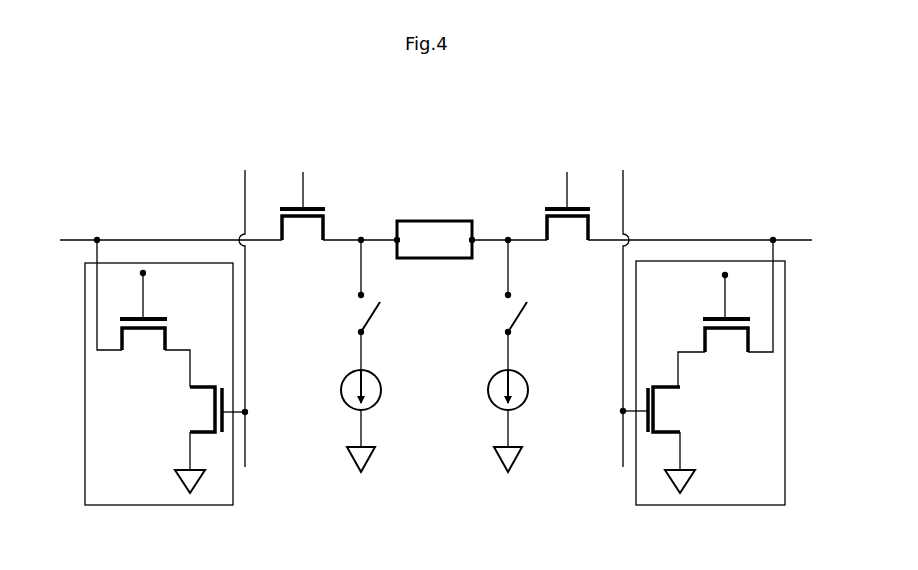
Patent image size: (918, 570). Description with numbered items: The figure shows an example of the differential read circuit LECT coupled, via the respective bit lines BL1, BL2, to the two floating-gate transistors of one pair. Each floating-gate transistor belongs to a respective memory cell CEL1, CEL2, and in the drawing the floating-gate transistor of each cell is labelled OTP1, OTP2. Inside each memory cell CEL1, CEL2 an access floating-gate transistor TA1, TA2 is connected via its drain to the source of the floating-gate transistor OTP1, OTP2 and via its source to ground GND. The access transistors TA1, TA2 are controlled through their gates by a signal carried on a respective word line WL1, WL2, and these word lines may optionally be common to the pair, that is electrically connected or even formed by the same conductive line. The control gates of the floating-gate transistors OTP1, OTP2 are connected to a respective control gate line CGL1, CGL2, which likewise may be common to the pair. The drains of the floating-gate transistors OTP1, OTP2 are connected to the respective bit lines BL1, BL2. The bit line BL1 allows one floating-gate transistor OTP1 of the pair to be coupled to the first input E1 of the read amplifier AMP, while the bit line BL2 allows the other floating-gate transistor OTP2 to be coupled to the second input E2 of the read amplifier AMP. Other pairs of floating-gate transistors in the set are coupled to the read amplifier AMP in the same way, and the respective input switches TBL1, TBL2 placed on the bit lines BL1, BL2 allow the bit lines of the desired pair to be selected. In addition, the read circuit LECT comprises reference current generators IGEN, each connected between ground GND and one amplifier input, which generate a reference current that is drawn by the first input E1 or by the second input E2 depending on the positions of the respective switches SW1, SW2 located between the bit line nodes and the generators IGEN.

The bit line BL1 is at (70, 239).
The bit line BL2 is at (800, 239).
The word line WL1 is at (245, 172).
The word line WL2 is at (623, 172).
The input switch TBL1 is at (320, 186).
The input switch TBL2 is at (548, 186).
The read amplifier AMP is at (434, 239).
The first input E1 is at (396, 238).
The second input E2 is at (473, 238).
The differential read circuit LECT is at (459, 153).
The switch SW1 is at (373, 318).
The switch SW2 is at (520, 318).
The reference current generator IGEN is at (340, 392).
The ground GND is at (348, 458).
The memory cell CEL1 is at (160, 507).
The memory cell CEL2 is at (710, 507).
The first one-time programmable transistor OTP1 is at (138, 355).
The second one-time programmable transistor OTP2 is at (731, 355).
The control gate line CGL1 is at (146, 274).
The control gate line CGL2 is at (722, 276).
The access floating-gate transistor TA1 is at (186, 426).
The access floating-gate transistor TA2 is at (684, 426).